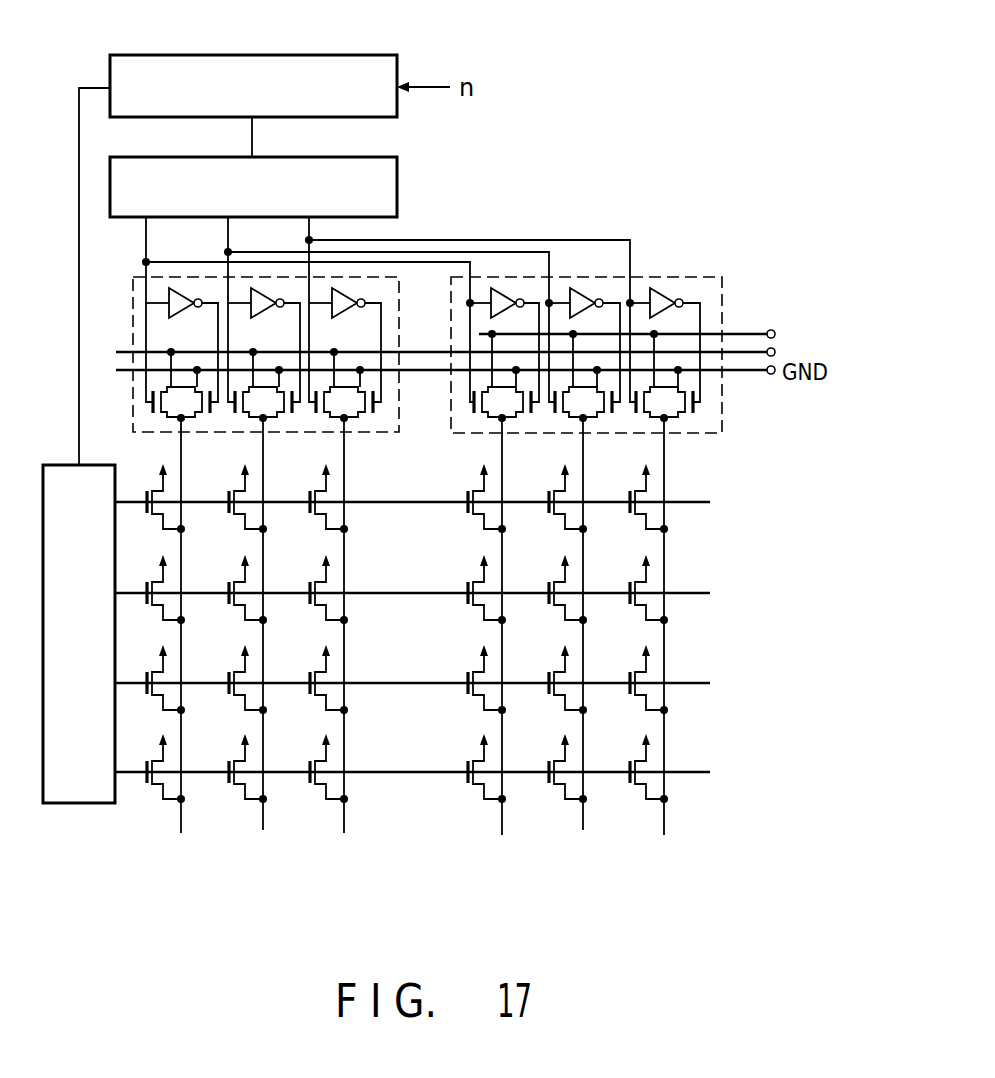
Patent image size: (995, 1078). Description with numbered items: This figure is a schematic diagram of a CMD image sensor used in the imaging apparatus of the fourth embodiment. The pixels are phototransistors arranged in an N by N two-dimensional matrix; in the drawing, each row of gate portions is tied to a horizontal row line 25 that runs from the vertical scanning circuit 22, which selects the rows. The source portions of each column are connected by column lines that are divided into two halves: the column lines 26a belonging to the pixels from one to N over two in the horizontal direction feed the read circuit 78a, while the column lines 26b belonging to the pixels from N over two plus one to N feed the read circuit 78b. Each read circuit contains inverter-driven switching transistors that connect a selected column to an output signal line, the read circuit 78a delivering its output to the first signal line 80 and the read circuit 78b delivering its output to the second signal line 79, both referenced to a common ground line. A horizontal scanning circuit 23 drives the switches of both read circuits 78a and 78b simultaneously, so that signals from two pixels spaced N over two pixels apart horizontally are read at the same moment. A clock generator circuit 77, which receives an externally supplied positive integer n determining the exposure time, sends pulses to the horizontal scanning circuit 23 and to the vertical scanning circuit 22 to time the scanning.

The clock generator circuit 77 is at (345, 55).
The horizontal scanning circuit 23 is at (397, 178).
The vertical scanning circuit 22 is at (78, 806).
The read circuit 78a is at (363, 434).
The read circuit 78b is at (727, 422).
The first signal line SIG 1 80 is at (730, 352).
The second signal line SIG 2 79 is at (743, 333).
The row selection line 25 is at (700, 500).
The first group of column lines 26a is at (345, 820).
The second group of column lines 26b is at (665, 820).